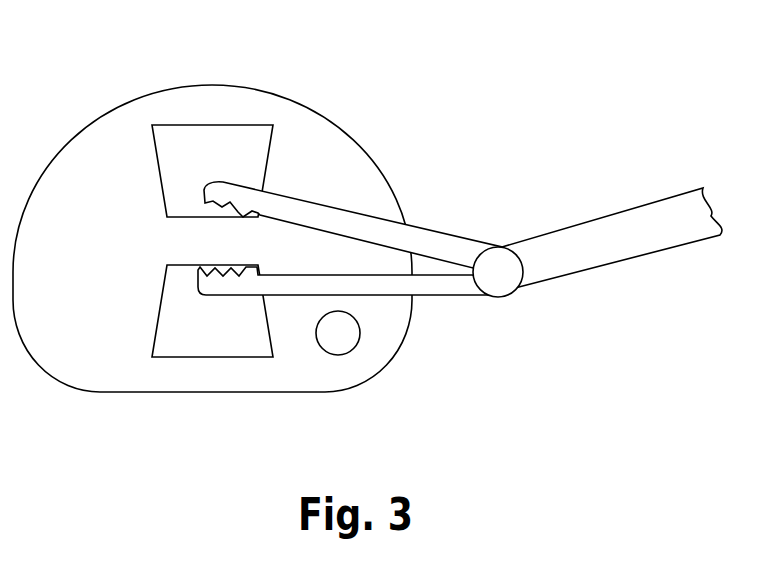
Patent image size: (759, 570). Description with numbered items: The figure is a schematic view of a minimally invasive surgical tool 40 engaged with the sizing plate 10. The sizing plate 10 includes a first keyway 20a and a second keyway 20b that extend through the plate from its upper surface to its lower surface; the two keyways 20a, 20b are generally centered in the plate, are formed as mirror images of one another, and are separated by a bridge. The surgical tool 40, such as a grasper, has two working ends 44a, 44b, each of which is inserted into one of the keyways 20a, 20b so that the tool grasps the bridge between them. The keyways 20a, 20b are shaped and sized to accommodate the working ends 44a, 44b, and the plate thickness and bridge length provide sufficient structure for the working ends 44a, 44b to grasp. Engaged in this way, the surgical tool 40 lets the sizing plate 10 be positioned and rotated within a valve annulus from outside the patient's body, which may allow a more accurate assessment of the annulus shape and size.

The sizing plate 10 is at (165, 92).
The first keyway 20a is at (228, 125).
The second keyway 20b is at (203, 357).
The minimally invasive surgical tool 40 is at (590, 218).
The working end 44a is at (233, 183).
The working end 44b is at (228, 297).